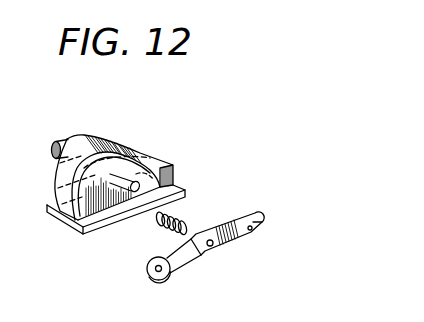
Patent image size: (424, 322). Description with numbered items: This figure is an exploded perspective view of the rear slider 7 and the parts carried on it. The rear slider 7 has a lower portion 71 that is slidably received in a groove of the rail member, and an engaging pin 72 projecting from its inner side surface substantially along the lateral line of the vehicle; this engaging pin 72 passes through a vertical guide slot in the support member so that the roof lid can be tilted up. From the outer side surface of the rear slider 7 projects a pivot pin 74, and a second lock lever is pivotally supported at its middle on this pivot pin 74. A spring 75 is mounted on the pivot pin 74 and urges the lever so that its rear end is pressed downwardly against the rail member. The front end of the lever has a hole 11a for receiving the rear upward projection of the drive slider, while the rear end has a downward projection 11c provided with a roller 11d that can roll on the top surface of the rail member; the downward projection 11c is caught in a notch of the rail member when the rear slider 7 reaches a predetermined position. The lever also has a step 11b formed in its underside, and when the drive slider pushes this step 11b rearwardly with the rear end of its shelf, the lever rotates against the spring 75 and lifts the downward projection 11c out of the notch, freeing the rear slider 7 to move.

The rear slider 7 is at (157, 142).
The lower portion 71 is at (55, 216).
The engaging pin 72 is at (62, 140).
The pivot pin 74 is at (150, 178).
The spring 75 is at (185, 221).
The hole 11a is at (156, 266).
The step 11b is at (205, 257).
The downward projection 11c is at (263, 219).
The roller 11d is at (249, 236).